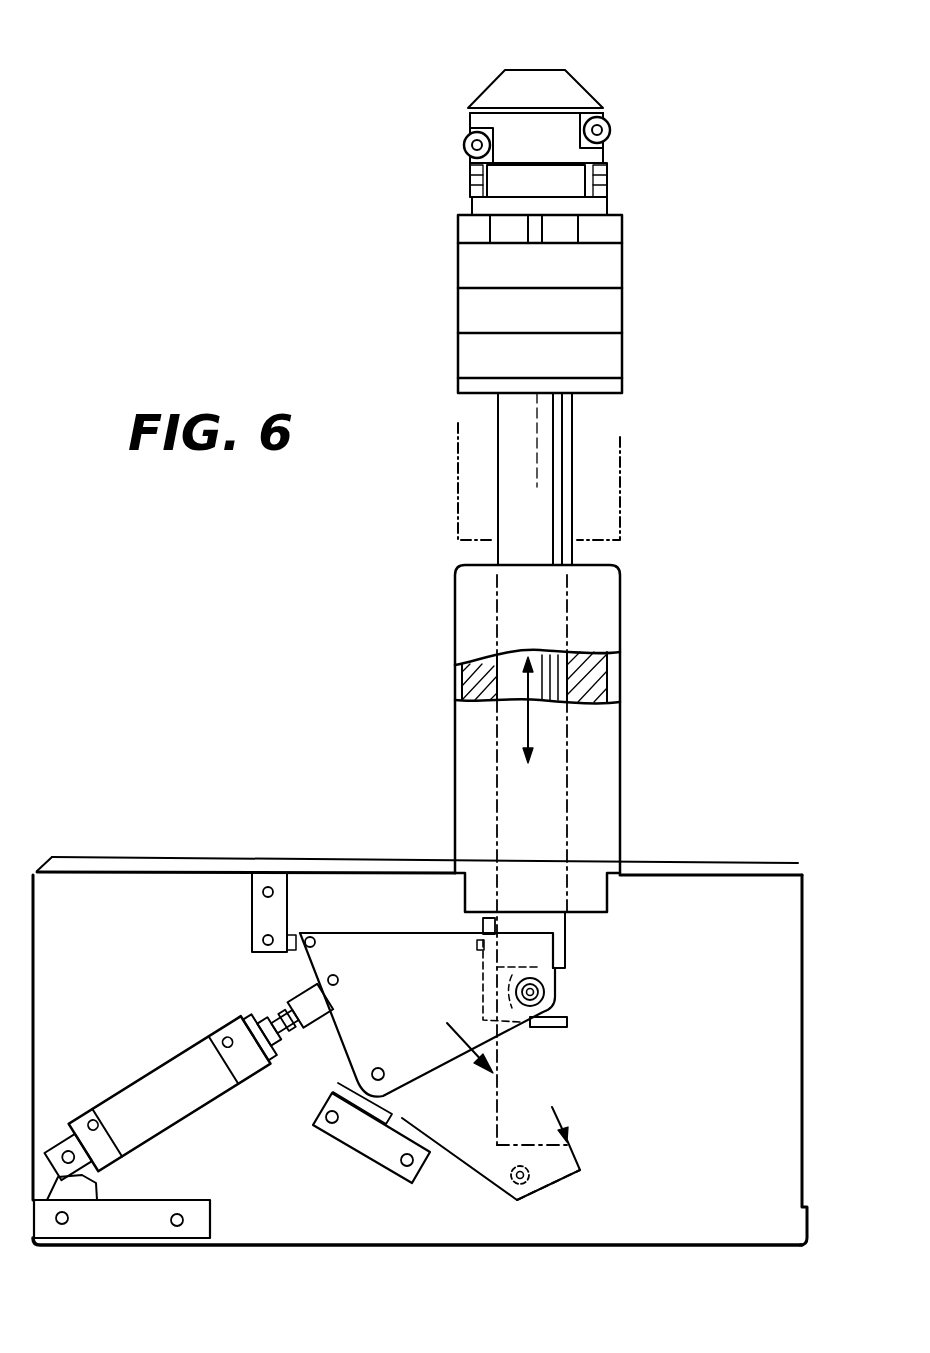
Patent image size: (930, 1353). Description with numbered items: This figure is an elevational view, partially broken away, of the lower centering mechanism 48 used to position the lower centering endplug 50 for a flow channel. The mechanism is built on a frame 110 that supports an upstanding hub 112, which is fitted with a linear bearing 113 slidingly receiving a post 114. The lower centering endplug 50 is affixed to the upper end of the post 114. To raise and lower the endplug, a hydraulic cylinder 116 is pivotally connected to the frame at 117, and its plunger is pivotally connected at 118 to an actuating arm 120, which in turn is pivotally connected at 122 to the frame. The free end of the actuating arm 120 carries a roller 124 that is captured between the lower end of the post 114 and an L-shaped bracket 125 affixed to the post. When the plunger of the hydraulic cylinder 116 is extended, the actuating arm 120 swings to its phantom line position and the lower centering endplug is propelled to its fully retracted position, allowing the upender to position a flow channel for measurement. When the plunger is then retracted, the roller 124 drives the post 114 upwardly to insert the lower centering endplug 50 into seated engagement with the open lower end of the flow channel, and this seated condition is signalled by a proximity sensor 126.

The lower centering mechanism 48 is at (420, 735).
The lower centering endplug 50 is at (593, 92).
The frame 110 is at (700, 870).
The hub 112 is at (600, 622).
The linear bearing 113 is at (590, 688).
The post 114 is at (545, 499).
The hydraulic cylinder 116 is at (203, 1083).
The pivotal connection of hydraulic cylinder to frame 117 is at (60, 1130).
The pivotal connection of plunger to actuating arm 118 is at (340, 978).
The actuating arm 120 is at (462, 998).
The pivotal connection of actuating arm to frame 122 is at (383, 1068).
The roller 124 is at (545, 995).
The L-shaped bracket 125 is at (553, 1030).
The proximity sensor 126 is at (306, 934).